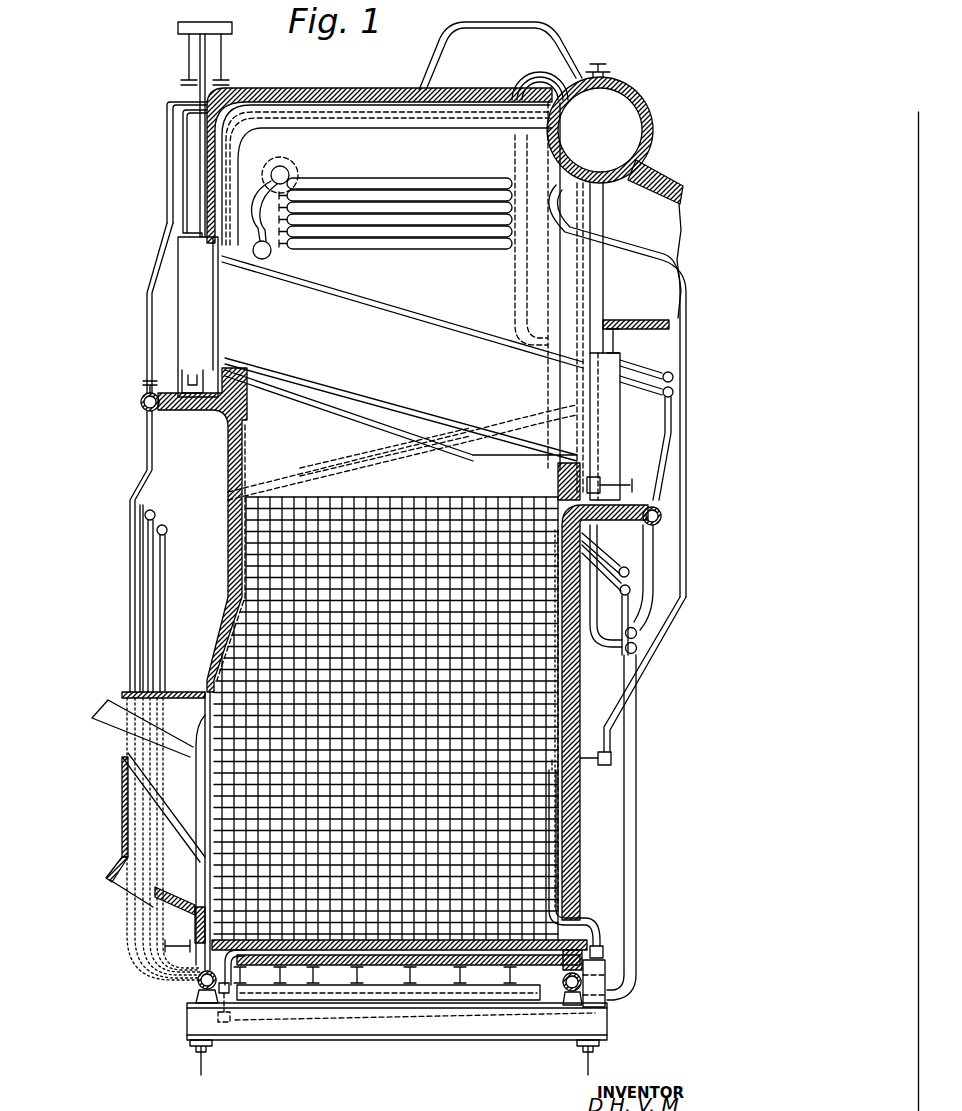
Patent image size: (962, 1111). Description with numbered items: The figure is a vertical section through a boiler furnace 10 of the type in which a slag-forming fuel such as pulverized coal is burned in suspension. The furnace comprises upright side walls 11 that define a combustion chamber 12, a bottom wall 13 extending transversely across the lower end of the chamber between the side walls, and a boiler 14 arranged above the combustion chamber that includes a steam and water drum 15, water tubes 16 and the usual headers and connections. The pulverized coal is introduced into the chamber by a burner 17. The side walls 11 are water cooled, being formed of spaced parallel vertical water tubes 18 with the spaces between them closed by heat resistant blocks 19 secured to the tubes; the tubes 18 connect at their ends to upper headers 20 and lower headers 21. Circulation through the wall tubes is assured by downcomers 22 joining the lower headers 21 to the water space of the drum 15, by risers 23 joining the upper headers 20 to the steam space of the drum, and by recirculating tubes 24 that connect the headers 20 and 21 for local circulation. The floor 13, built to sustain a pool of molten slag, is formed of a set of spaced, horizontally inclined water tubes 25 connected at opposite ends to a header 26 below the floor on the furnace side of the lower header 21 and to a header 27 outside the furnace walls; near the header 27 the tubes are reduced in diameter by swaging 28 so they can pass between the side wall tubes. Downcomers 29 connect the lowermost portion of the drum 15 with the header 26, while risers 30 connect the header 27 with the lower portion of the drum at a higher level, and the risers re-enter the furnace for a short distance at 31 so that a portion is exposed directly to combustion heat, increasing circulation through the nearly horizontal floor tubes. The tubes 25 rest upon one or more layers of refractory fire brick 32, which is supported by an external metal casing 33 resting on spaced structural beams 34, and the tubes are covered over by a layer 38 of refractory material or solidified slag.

The boiler furnace 10 is at (122, 436).
The upright side walls 11 is at (228, 629).
The combustion chamber 12 is at (421, 750).
The bottom wall 13 is at (417, 931).
The boiler 14 is at (461, 298).
The steam and water drum 15 is at (575, 167).
The water tubes 16 is at (375, 308).
The burner 17 is at (188, 794).
The water tubes 18 is at (212, 707).
The heat resistant blocks 19 is at (242, 613).
The upper headers 20 is at (141, 404).
The lower headers 21 is at (197, 988).
The downcomers 22 is at (172, 568).
The risers 23 is at (166, 300).
The recirculating tubes 24 is at (141, 480).
The water tubes 25 is at (323, 950).
The header 26 is at (216, 1008).
The header 27 is at (606, 955).
The swaging 28 is at (572, 965).
The downcomers 29 is at (642, 869).
The risers 30 is at (669, 635).
The re-entering portion of risers 31 is at (552, 817).
The refractory material 32 is at (443, 1005).
The external metal casing 33 is at (348, 1010).
The structural beams 34 is at (299, 1000).
The layer of refractory material 38 is at (251, 940).